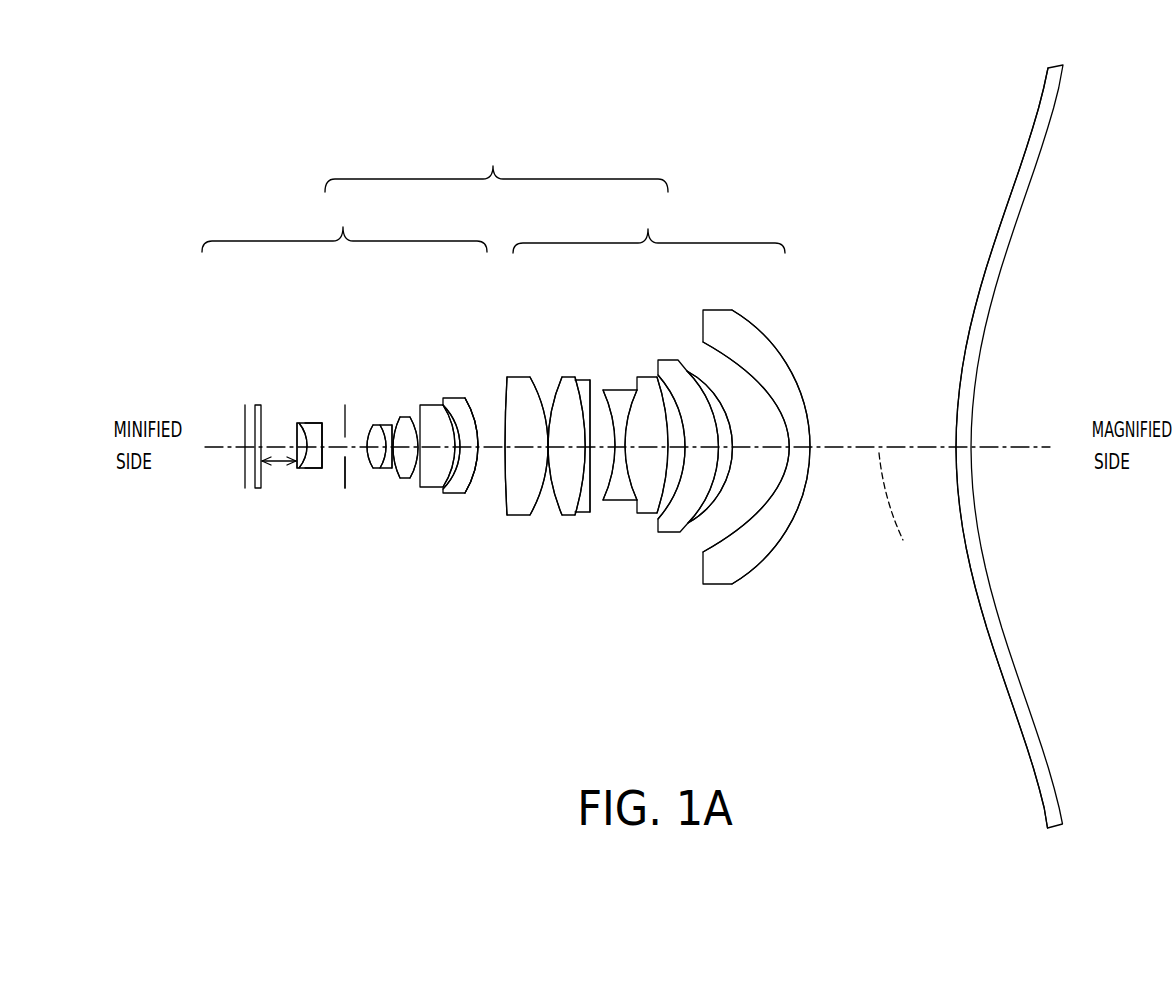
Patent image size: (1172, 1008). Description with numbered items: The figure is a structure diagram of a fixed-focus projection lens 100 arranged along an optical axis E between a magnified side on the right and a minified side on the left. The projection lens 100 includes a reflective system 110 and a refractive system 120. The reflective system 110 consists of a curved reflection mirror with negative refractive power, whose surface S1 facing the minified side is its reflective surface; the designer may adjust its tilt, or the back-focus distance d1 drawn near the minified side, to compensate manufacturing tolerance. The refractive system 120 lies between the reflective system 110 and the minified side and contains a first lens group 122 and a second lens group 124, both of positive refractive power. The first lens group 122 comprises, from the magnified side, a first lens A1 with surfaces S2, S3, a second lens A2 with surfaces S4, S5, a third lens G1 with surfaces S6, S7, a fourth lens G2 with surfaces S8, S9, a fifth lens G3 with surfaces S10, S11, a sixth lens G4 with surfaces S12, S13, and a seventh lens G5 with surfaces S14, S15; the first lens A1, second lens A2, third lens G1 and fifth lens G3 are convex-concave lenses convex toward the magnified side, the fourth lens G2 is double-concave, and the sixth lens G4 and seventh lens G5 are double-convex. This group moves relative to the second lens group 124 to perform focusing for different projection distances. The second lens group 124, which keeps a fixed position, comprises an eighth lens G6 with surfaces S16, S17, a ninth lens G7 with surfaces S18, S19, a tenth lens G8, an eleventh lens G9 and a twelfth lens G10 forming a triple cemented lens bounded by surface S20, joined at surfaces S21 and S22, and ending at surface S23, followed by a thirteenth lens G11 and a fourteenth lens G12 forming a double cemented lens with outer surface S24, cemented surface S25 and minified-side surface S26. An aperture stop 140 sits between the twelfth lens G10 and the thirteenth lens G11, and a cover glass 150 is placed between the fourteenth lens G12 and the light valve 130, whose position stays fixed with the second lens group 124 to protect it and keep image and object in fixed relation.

The projection lens 100 is at (824, 720).
The reflective system 110 is at (1046, 84).
The refractive system 120 is at (496, 163).
The first lens group 122 is at (649, 225).
The second lens group 124 is at (344, 224).
The light valve 130 is at (245, 420).
The aperture stop 140 is at (344, 484).
The cover glass 150 is at (258, 488).
The third lens G1 is at (647, 385).
The fourth lens G2 is at (617, 395).
The fifth lens G3 is at (581, 385).
The sixth lens G4 is at (568, 388).
The seventh lens G5 is at (523, 388).
The eighth lens G6 is at (459, 402).
The ninth lens G7 is at (429, 410).
The tenth lens G8 is at (412, 416).
The eleventh lens G9 is at (393, 418).
The twelfth lens G10 is at (375, 424).
The thirteenth lens G11 is at (316, 423).
The fourteenth lens G12 is at (300, 423).
The first lens A1 is at (748, 345).
The second lens A2 is at (670, 367).
The surface S1 is at (996, 667).
The surface S2 is at (784, 546).
The surface S3 is at (725, 537).
The surface S4 is at (688, 524).
The surface S5 is at (709, 484).
The surface S6 is at (669, 504).
The surface S7 is at (646, 484).
The surface S8 is at (628, 471).
The surface S9 is at (612, 484).
The surface S10 is at (592, 500).
The surface S11 is at (579, 497).
The surface S12 is at (589, 455).
The surface S13 is at (538, 503).
The surface S14 is at (552, 491).
The surface S15 is at (506, 497).
The surface S16 is at (474, 482).
The surface S17 is at (450, 473).
The surface S18 is at (423, 468).
The surface S19 is at (417, 466).
The surface S20 is at (396, 464).
The surface S21 is at (389, 466).
The surface S22 is at (382, 464).
The surface S23 is at (364, 453).
The surface S24 is at (323, 466).
The surface S25 is at (310, 463).
The surface S26 is at (296, 456).
The back-focus distance d1 is at (279, 476).
The optical axis E is at (892, 510).